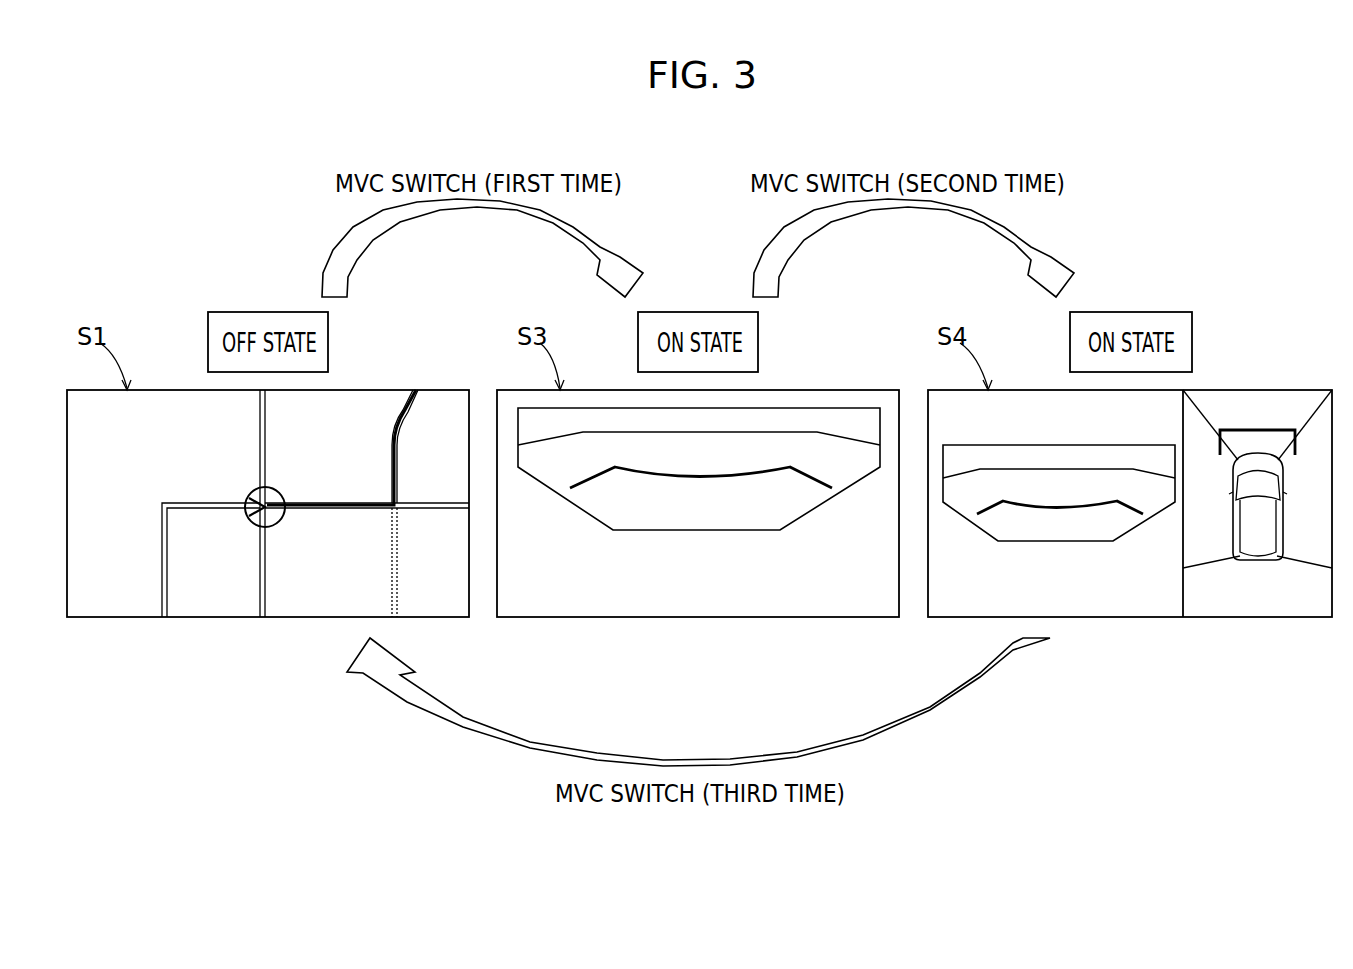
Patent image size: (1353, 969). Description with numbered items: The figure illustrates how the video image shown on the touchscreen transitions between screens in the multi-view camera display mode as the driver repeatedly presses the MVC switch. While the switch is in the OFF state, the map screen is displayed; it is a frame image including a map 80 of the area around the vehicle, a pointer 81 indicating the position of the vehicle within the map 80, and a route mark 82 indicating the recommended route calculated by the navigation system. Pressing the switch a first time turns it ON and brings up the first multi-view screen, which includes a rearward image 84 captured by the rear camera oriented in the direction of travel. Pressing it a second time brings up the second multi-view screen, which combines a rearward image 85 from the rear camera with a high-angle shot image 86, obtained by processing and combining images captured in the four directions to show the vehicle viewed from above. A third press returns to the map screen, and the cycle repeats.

The map 80 is at (436, 415).
The pointer 81 is at (255, 490).
The route mark 82 is at (317, 503).
The rearward image 84 is at (808, 417).
The rearward image 85 is at (1063, 528).
The high-angle shot image 86 is at (1252, 415).